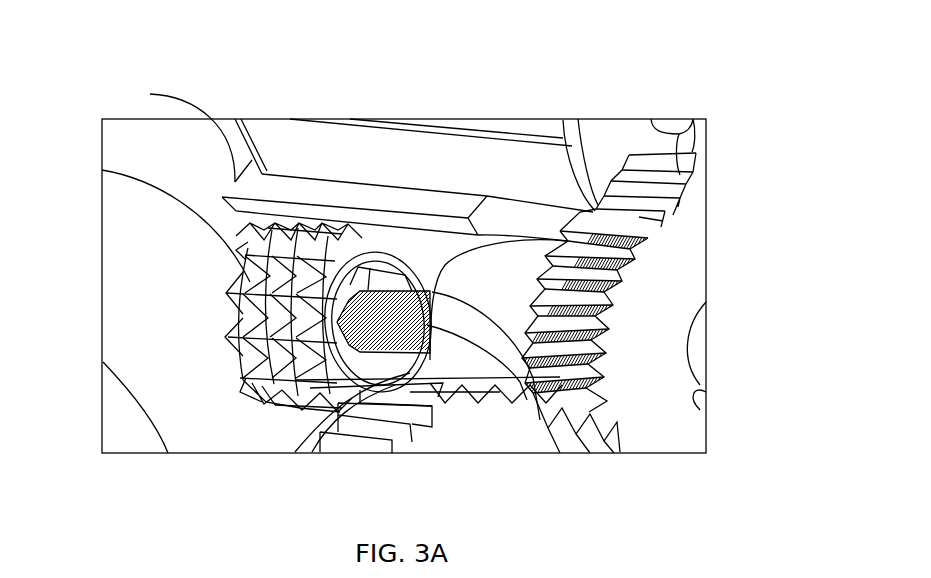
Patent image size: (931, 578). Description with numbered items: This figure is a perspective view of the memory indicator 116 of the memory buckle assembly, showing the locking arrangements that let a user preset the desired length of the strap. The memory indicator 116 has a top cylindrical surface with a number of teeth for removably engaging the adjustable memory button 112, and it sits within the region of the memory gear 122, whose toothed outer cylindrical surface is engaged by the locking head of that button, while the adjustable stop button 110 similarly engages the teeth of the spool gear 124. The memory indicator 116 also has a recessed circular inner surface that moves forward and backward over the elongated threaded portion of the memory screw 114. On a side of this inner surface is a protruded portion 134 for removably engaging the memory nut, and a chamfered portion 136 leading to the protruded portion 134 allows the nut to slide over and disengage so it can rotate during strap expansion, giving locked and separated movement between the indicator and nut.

The adjustable stop button 110 is at (562, 120).
The adjustable memory button 112 is at (150, 94).
The memory screw 114 is at (540, 420).
The memory indicator 116 is at (102, 170).
The memory gear 122 is at (398, 425).
The spool gear 124 is at (706, 143).
The protruded portion 134 is at (578, 432).
The chamfered portion 136 is at (437, 376).